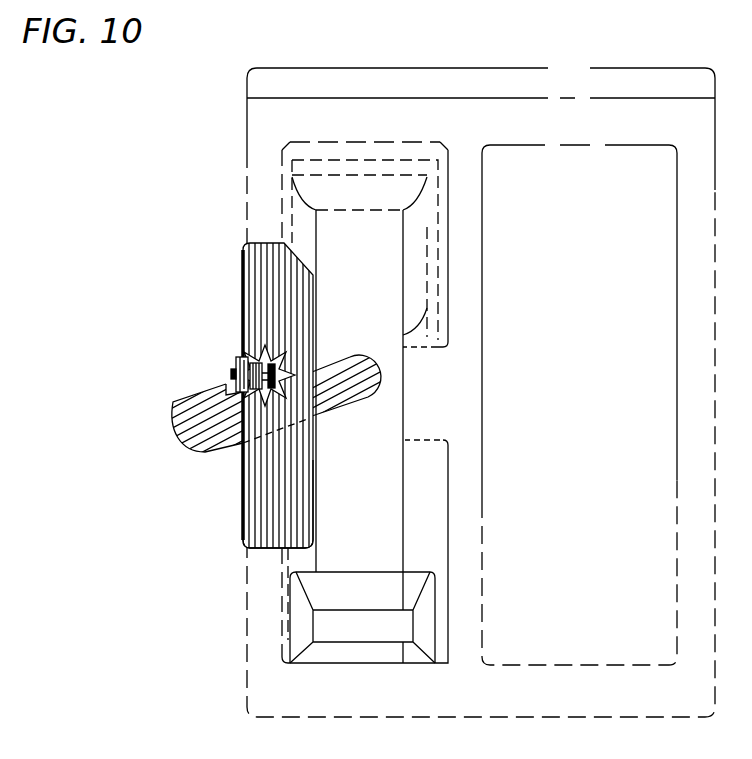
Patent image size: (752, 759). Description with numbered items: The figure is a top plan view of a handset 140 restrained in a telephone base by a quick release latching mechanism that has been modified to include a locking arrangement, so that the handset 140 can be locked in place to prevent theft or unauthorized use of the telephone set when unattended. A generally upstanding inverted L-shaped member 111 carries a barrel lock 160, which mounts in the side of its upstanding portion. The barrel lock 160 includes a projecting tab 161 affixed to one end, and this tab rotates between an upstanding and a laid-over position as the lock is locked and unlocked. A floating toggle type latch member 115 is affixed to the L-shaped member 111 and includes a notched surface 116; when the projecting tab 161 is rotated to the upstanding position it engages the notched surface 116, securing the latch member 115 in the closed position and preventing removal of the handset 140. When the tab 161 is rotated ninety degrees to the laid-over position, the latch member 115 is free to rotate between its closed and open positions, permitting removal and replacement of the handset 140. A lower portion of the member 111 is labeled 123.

The handset 140 is at (373, 188).
The generally upstanding inverted L-shaped member 111 is at (277, 379).
The lower portion of slide block 123 is at (268, 512).
The floating toggle type latch member 115 is at (192, 427).
The notched surface 116 is at (317, 400).
The barrel lock 160 is at (236, 370).
The projecting tab 161 is at (287, 352).